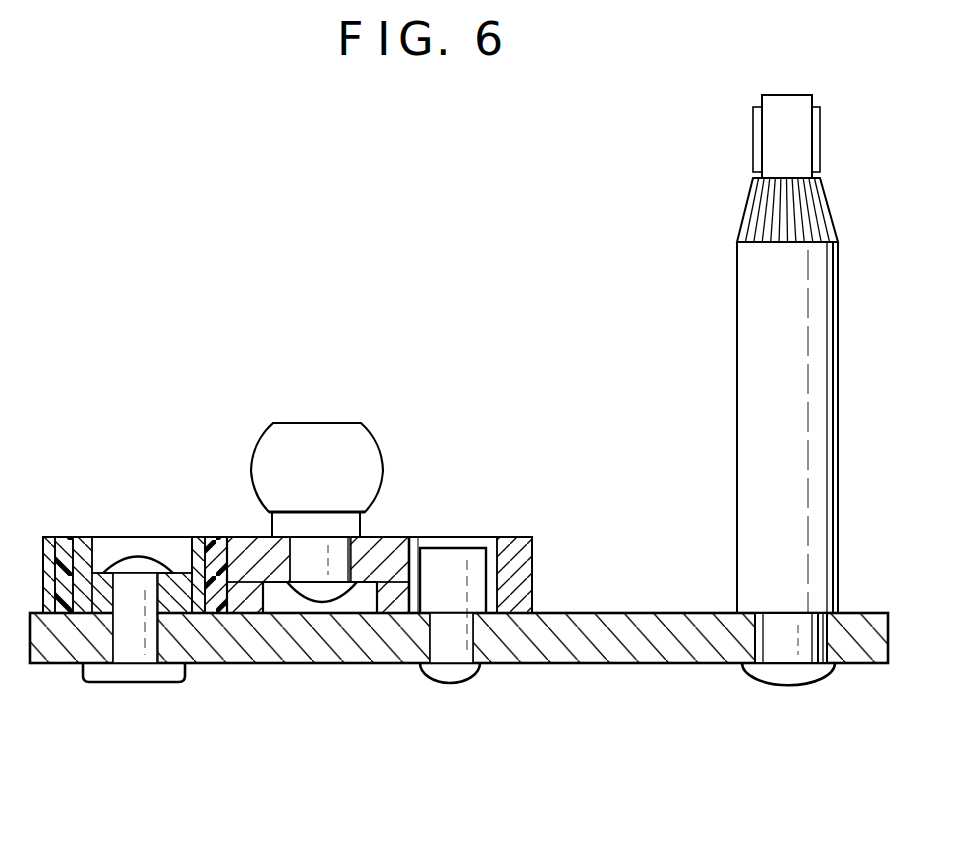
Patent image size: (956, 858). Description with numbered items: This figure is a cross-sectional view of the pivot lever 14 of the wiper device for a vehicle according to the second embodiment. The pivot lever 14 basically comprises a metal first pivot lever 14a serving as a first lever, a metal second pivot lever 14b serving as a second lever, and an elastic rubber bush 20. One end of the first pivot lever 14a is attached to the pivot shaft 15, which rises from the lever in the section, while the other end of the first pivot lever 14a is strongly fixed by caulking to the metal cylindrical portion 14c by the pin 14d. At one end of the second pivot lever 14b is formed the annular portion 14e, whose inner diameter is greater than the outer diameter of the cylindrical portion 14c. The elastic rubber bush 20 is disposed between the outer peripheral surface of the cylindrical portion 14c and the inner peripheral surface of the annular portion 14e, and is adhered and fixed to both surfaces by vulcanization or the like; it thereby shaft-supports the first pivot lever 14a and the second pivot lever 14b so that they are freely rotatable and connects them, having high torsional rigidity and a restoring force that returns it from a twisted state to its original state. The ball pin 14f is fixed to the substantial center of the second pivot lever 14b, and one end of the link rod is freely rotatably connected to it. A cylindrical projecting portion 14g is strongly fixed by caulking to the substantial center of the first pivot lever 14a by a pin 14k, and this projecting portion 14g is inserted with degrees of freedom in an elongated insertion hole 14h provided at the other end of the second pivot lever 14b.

The pivot lever 14 is at (357, 670).
The first pivot lever 14a is at (585, 663).
The second pivot lever 14b is at (385, 555).
The cylindrical portion 14c is at (100, 547).
The pin 14d is at (143, 683).
The annular portion 14e is at (240, 540).
The ball pin 14f is at (323, 433).
The projecting portion 14g is at (468, 558).
The insertion hole 14h is at (417, 538).
The pin 14k is at (453, 673).
The pivot shaft 15 is at (840, 370).
The elastic rubber bush 20 is at (67, 540).